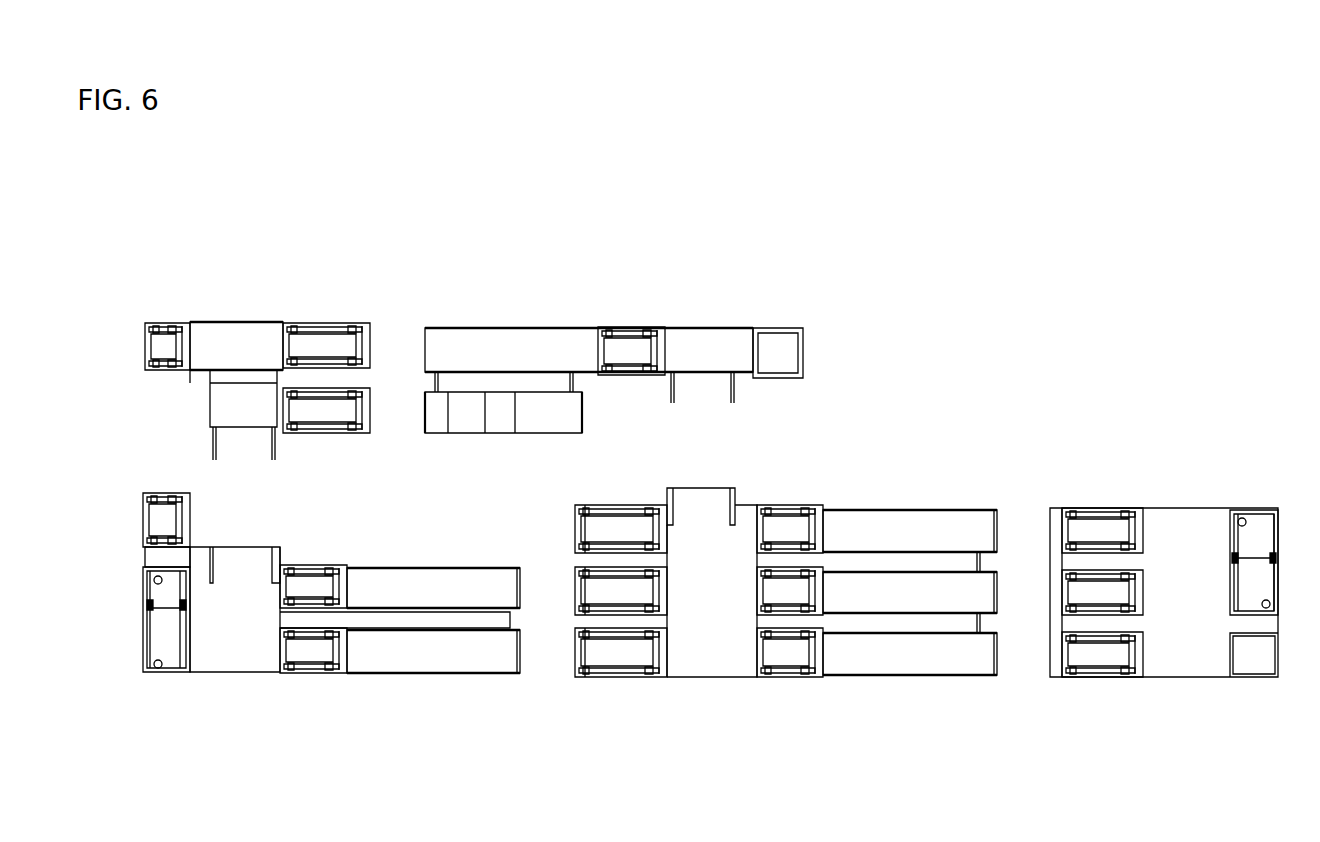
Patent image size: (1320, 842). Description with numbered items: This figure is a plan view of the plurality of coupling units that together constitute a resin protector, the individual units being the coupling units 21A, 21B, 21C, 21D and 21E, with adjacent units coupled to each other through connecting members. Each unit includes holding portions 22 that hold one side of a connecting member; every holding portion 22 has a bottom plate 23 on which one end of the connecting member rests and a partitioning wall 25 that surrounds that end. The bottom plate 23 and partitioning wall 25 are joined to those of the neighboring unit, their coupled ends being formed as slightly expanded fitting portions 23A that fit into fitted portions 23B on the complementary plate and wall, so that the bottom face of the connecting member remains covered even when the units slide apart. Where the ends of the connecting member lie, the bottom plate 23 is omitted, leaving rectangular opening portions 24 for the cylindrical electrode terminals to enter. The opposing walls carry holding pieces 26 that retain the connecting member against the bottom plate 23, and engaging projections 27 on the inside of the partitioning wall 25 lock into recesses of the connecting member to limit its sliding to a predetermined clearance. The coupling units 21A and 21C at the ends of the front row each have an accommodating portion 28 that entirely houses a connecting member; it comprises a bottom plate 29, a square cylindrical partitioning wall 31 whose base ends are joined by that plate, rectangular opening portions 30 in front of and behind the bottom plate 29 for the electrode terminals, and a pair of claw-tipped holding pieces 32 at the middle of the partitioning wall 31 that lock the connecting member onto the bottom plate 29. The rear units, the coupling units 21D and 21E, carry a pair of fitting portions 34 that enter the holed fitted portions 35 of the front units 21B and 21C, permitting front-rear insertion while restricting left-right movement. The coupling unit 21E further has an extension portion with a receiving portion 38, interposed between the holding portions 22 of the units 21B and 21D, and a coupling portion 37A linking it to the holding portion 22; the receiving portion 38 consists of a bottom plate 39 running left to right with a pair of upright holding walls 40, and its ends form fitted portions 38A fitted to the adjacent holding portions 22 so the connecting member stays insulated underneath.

The coupling unit 21A is at (1192, 690).
The coupling unit 21B is at (712, 700).
The coupling unit 21C is at (245, 700).
The coupling unit 21D is at (247, 272).
The coupling unit 21E is at (648, 260).
The holding portion 22 is at (150, 318).
The bottom plate 23 is at (208, 360).
The fitting portion 23A is at (370, 345).
The fitted portion 23B is at (190, 372).
The opening portion 24 is at (285, 345).
The partitioning wall 25 is at (143, 333).
The holding piece 26 is at (185, 365).
The engaging projection 27 is at (163, 345).
The accommodating portion 28 is at (141, 625).
The bottom plate 29 is at (145, 650).
The opening portion 30 is at (155, 580).
The partitioning wall 31 is at (205, 670).
The holding piece 32 is at (180, 660).
The fitting portion 34 is at (270, 457).
The fitted portion 35 is at (700, 488).
The coupling portion 37A is at (495, 400).
The receiving portion 38 is at (425, 483).
The fitted portion 38A is at (582, 412).
The bottom plate 39 is at (448, 415).
The holding wall 40 is at (485, 392).